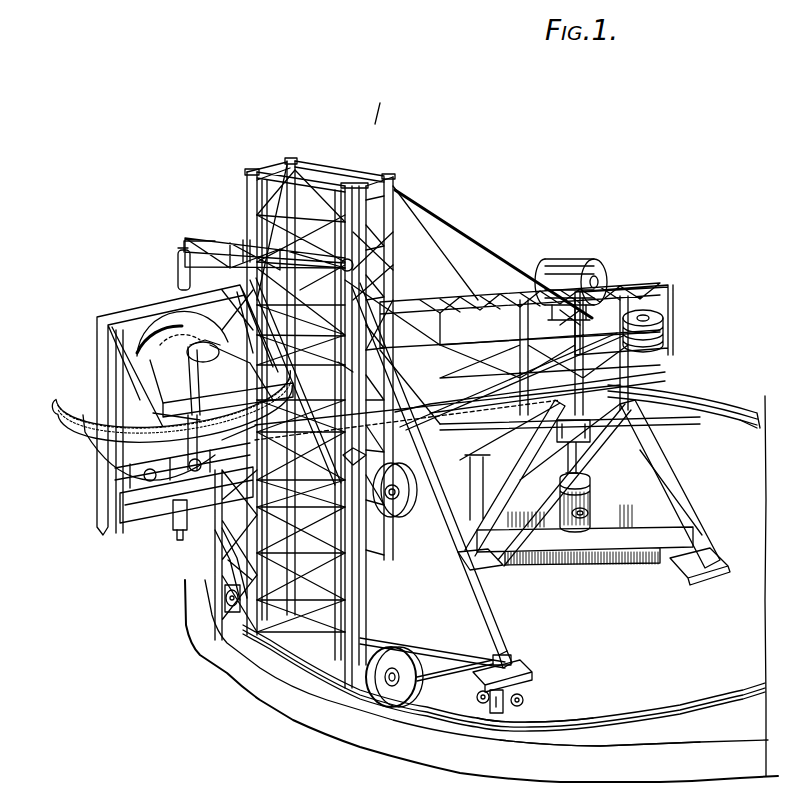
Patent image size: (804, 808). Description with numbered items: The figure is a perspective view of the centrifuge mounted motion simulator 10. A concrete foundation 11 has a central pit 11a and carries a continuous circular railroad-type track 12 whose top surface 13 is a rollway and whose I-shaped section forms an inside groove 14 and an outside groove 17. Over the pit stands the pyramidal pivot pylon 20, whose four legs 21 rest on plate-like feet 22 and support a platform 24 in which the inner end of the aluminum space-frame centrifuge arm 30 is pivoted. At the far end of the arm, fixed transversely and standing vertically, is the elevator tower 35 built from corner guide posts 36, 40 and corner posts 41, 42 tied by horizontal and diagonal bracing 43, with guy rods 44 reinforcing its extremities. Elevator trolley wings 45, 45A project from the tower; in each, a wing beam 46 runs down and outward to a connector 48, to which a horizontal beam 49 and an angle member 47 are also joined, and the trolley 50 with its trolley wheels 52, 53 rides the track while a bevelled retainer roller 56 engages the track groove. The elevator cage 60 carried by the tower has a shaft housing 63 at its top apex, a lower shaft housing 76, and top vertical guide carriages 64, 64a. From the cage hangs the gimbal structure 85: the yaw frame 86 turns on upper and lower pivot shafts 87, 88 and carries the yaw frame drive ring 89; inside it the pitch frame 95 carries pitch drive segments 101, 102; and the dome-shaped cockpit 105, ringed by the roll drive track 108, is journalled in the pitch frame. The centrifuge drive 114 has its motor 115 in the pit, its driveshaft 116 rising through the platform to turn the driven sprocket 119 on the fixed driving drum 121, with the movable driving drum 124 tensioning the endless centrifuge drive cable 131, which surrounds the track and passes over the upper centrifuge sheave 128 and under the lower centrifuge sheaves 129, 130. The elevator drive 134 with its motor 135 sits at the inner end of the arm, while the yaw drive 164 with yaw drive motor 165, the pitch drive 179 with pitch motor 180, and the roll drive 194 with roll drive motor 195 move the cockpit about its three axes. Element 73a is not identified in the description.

The centrifuge mounted motion simulator 10 is at (386, 103).
The foundation 11 is at (637, 654).
The pit 11a is at (520, 565).
The track 12 is at (730, 407).
The top surface 13 is at (658, 704).
The inside groove 14 is at (739, 418).
The outside groove 17 is at (675, 707).
The pivot pylon 20 is at (696, 497).
The legs 21 is at (700, 538).
The feet 22 is at (700, 580).
The platform 24 is at (624, 383).
The centrifuge arm 30 is at (448, 302).
The elevator tower 35 is at (295, 158).
The corner guide post 36 is at (247, 172).
The corner guide post 40 is at (343, 231).
The corner post 41 is at (290, 213).
The corner post 42 is at (395, 186).
The horizontal and diagonal bracing 43 is at (380, 284).
The guy rods 44 is at (422, 262).
The elevator trolley wing 45 is at (503, 642).
The elevator trolley wing 45A is at (222, 540).
The wing beam 46 is at (487, 612).
The angle member 47 is at (450, 671).
The connector 48 is at (512, 660).
The horizontal beam 49 is at (445, 645).
The trolley 50 is at (545, 676).
The trolley wheels 52 is at (476, 692).
The trolley wheel 53 is at (524, 697).
The bevelled retainer roller 56 is at (496, 714).
The elevator cage 60 is at (206, 240).
The shaft housing 63 is at (178, 274).
The top vertical guide carriage 64 is at (242, 245).
The top vertical guide carriage 64a is at (346, 260).
The bracket 73a is at (364, 362).
The shaft housing 76 is at (173, 527).
The gimbal structure 85 is at (116, 301).
The yaw frame 86 is at (116, 477).
The upper pivot shaft 87 is at (184, 250).
The lower pivot shaft 88 is at (177, 536).
The yaw frame drive ring 89 is at (63, 428).
The pitch frame 95 is at (186, 372).
The pitch drive segment 101 is at (130, 460).
The pitch drive segment 102 is at (268, 408).
The cockpit 105 is at (170, 350).
The roll drive track 108 is at (153, 356).
The centrifuge drive 114 is at (551, 496).
The centrifuge drive motor 115 is at (591, 500).
The centrifuge driveshaft 116 is at (557, 484).
The centrifuge driven sprocket 119 is at (657, 313).
The fixed driving drum 121 is at (665, 338).
The movable driving drum 124 is at (604, 316).
The upper centrifuge sheave 128 is at (404, 491).
The lower centrifuge sheave 129 is at (226, 607).
The lower centrifuge sheave 130 is at (388, 700).
The centrifuge drive cable 131 is at (775, 405).
The elevator drive 134 is at (559, 249).
The elevator drive motor 135 is at (580, 262).
The yaw drive 164 is at (306, 330).
The yaw drive motor 165 is at (337, 458).
The pitch drive 179 is at (200, 476).
The pitch motor 180 is at (172, 498).
The roll drive 194 is at (208, 336).
The roll drive motor 195 is at (166, 344).